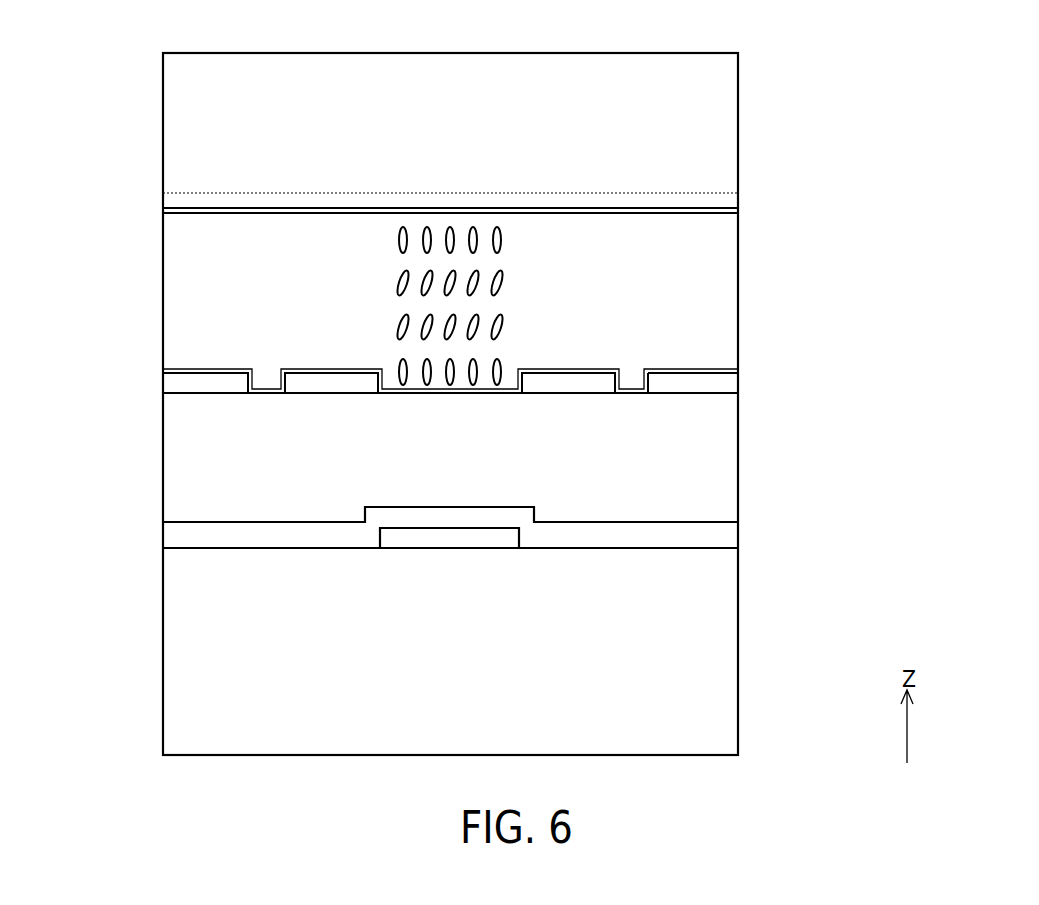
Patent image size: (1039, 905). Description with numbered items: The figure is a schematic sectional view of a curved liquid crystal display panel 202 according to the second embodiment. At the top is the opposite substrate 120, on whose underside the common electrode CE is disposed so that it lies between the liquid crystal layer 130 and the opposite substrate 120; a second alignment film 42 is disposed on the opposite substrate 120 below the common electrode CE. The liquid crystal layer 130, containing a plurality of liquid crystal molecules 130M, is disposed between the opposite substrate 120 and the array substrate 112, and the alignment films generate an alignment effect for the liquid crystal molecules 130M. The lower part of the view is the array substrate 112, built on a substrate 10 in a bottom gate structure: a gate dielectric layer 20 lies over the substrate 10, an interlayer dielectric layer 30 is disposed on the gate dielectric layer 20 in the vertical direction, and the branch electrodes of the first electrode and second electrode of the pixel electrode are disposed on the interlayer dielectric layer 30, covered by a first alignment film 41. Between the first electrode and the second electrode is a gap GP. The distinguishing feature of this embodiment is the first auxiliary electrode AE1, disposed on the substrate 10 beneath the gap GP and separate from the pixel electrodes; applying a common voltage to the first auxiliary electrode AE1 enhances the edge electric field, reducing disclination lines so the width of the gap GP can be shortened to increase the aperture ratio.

The curved liquid crystal display panel 202 is at (841, 41).
The opposite substrate 120 is at (188, 121).
The common electrode CE is at (176, 196).
The second alignment film 42 is at (172, 213).
The liquid crystal layer 130 is at (188, 258).
The liquid crystal molecules 130M is at (503, 280).
The first alignment film 41 is at (165, 372).
The gap GP is at (432, 381).
The interlayer dielectric layer 30 is at (188, 460).
The gate dielectric layer 20 is at (188, 536).
The first auxiliary electrode AE1 is at (483, 542).
The substrate 10 is at (188, 651).
The array substrate 112 is at (755, 367).